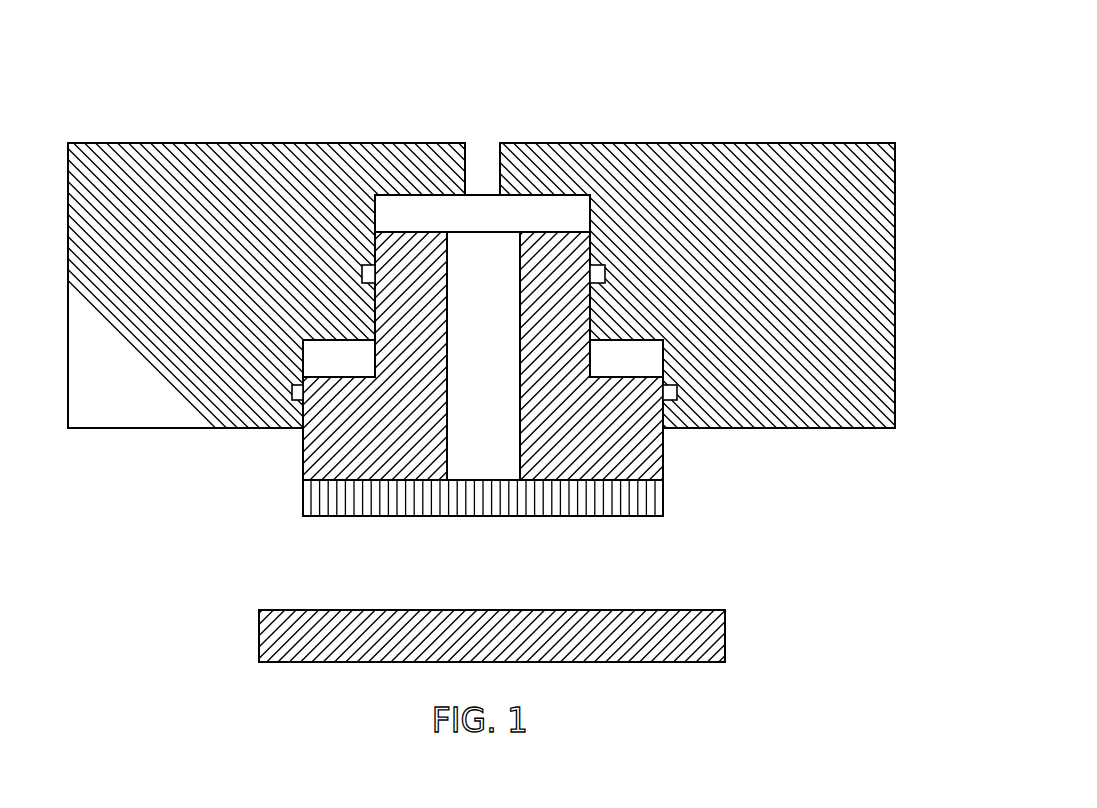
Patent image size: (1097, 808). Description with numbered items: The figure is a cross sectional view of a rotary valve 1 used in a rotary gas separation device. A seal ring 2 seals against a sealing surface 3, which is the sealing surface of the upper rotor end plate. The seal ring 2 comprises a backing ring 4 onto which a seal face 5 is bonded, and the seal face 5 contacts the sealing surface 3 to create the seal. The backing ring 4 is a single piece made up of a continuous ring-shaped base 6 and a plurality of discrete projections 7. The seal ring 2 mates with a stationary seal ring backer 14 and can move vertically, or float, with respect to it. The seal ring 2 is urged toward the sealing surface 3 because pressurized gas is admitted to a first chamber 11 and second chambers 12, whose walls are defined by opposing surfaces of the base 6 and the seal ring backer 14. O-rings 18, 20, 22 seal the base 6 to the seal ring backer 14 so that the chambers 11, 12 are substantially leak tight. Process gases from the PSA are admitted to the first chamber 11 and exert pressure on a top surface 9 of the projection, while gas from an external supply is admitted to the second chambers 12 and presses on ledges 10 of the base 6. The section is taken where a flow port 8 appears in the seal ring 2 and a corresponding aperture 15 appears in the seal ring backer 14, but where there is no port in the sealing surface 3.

The rotary valve 1 is at (548, 295).
The seal ring 2 is at (481, 317).
The sealing surface 3 is at (725, 628).
The backing ring 4 is at (640, 308).
The seal face 5 is at (556, 478).
The base 6 is at (481, 315).
The projections 7 is at (552, 250).
The flow port 8 is at (483, 463).
The top surface 9 is at (523, 230).
The ledges 10 is at (337, 373).
The first chamber 11 is at (425, 207).
The second chambers 12 is at (303, 343).
The seal ring backer 14 is at (548, 223).
The aperture 15 is at (485, 158).
The O-ring 18 is at (678, 400).
The O-ring 20 is at (292, 395).
The O-ring 22 is at (335, 248).